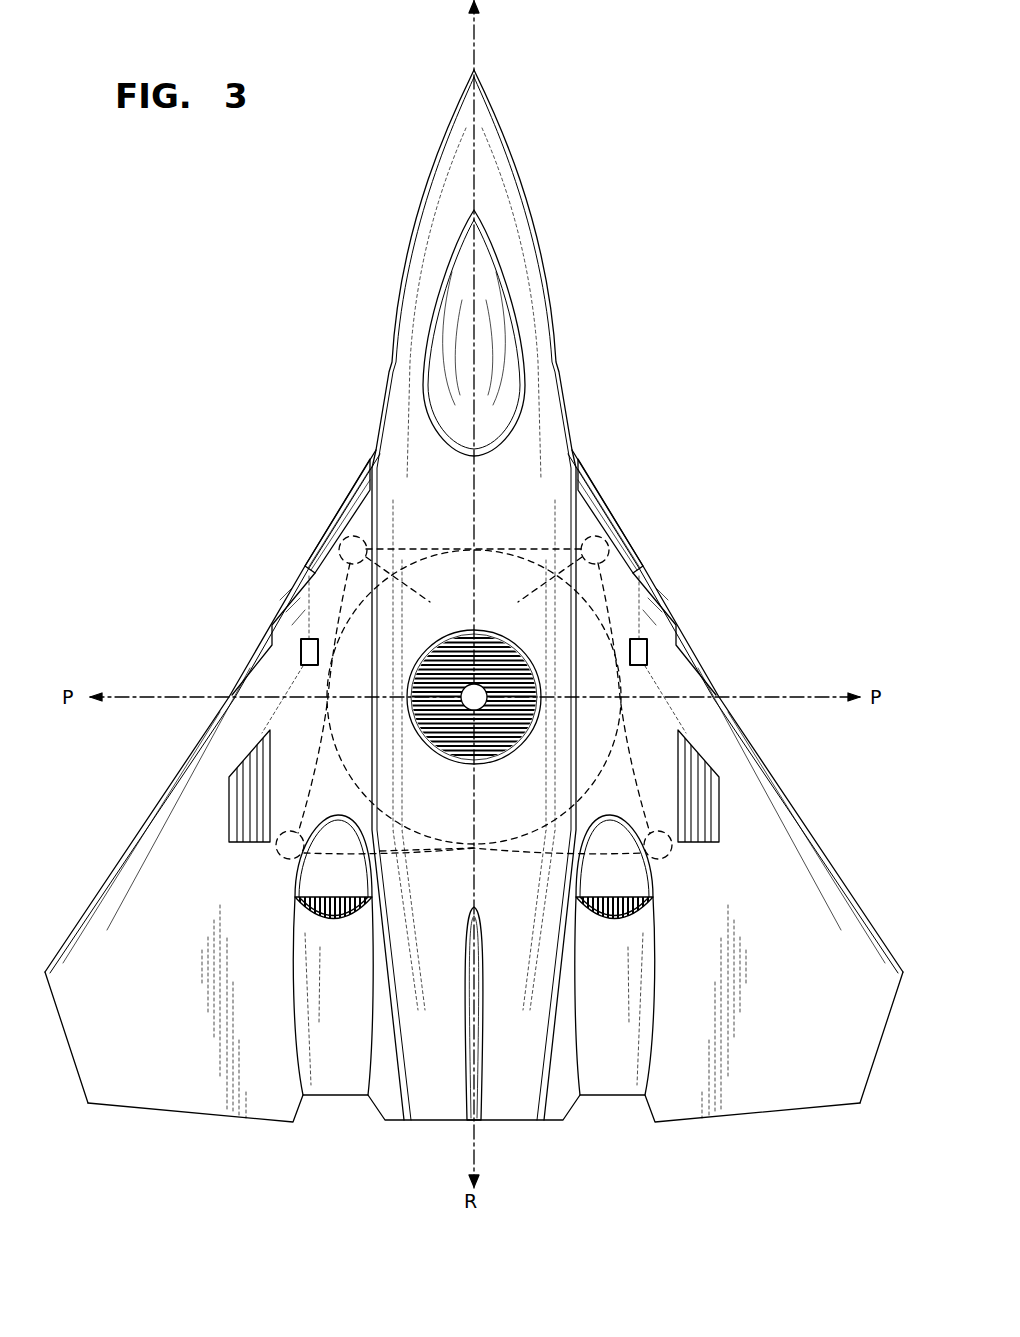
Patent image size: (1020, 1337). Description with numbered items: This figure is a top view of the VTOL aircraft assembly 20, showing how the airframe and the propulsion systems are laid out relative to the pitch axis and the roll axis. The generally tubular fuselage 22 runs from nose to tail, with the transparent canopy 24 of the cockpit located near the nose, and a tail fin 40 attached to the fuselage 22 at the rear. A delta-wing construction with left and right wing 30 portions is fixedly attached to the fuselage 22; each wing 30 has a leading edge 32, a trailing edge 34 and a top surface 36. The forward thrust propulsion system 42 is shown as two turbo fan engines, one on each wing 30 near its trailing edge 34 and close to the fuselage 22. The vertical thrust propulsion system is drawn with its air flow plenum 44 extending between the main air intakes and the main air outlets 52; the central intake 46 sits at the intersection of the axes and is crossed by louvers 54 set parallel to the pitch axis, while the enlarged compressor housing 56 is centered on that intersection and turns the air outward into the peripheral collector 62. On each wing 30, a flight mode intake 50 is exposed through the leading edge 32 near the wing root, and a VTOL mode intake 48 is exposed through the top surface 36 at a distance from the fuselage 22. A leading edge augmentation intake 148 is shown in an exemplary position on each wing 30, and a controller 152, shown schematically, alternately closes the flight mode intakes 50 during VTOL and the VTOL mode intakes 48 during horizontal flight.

The aircraft assembly 20 is at (727, 236).
The fuselage 22 is at (412, 234).
The transparent canopy 24 is at (500, 313).
The wing 30 is at (84, 972).
The leading edge 32 is at (205, 734).
The trailing edge 34 is at (160, 1113).
The top surface 36 is at (184, 922).
The tail fin 40 is at (480, 1043).
The forward thrust propulsion system 42 is at (288, 990).
The air flow plenum 44 is at (442, 543).
The central intake 46 is at (452, 753).
The VTOL mode intake 48 is at (229, 797).
The flight mode intake 50 is at (336, 520).
The main air outlet 52 is at (411, 588).
The louvers 54 is at (500, 743).
The compressor housing 56 is at (490, 540).
The peripheral collector 62 is at (432, 853).
The leading edge augmentation intake 148 is at (262, 628).
The controller 152 is at (305, 637).